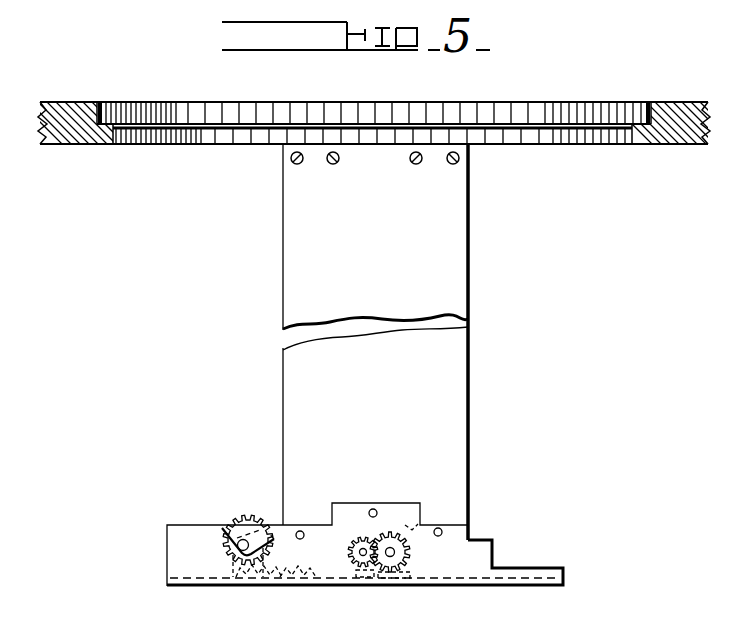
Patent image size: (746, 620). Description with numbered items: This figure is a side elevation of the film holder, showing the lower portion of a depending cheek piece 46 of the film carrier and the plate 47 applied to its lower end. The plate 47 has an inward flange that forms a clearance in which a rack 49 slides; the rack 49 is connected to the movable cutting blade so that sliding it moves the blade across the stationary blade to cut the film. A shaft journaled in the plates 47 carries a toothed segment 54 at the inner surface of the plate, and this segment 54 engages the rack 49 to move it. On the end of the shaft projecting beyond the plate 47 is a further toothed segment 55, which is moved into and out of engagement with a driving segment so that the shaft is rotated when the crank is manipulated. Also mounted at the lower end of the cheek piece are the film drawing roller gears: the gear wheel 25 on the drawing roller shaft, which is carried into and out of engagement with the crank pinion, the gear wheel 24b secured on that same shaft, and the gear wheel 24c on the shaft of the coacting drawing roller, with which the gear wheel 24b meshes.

The cheek piece 46 is at (455, 435).
The plate 47 is at (448, 542).
The toothed segment 55 is at (240, 518).
The rack 49 is at (267, 582).
The toothed segment 54 is at (290, 582).
The gear wheel 24c is at (360, 532).
The gear wheel 25 is at (393, 530).
The gear wheel 24b is at (408, 527).